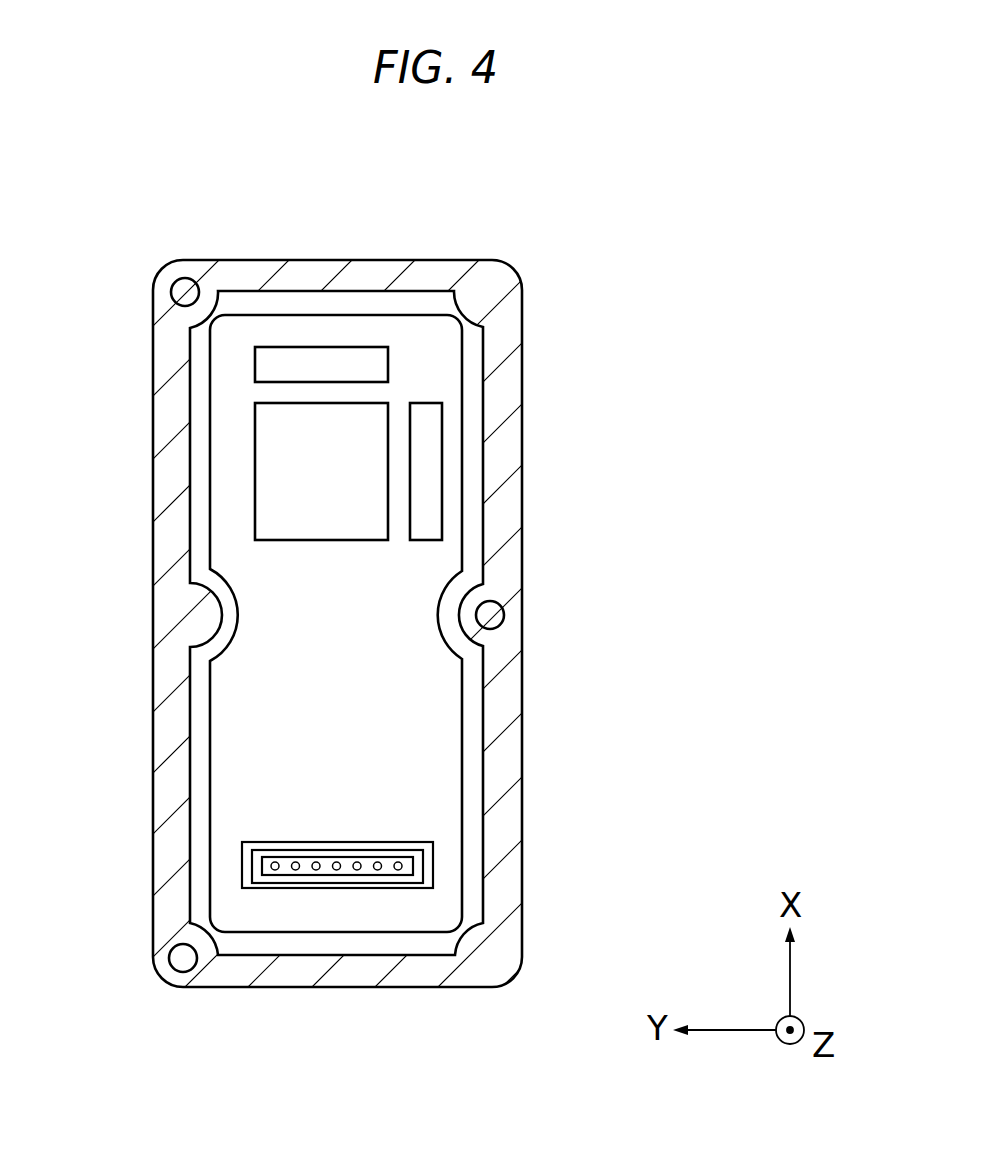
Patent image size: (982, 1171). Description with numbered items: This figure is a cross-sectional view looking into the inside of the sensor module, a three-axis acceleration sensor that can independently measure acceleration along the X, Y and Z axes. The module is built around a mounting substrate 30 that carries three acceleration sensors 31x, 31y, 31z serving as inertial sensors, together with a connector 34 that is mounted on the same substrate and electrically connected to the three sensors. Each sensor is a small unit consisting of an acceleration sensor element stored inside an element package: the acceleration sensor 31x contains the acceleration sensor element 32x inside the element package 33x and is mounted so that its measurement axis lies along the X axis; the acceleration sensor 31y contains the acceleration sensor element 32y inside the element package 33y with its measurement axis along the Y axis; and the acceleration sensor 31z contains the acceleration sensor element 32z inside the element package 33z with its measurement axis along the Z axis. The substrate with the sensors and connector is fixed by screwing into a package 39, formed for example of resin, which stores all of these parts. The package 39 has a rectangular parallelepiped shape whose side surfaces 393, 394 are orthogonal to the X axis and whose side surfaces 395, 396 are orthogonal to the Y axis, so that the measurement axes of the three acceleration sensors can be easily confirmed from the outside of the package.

The mounting substrate 30 is at (430, 725).
The acceleration sensor 31x is at (303, 289).
The acceleration sensor element 32x is at (293, 289).
The element package 33x is at (272, 352).
The acceleration sensor 31y is at (510, 461).
The acceleration sensor element 32y is at (510, 461).
The element package 33y is at (430, 495).
The acceleration sensor 31z is at (228, 462).
The acceleration sensor element 32z is at (228, 462).
The element package 33z is at (278, 424).
The connector 34 is at (323, 888).
The package 39 is at (525, 622).
The side surface 393 is at (491, 541).
The side surface 394 is at (491, 541).
The side surface 395 is at (491, 500).
The side surface 396 is at (522, 828).